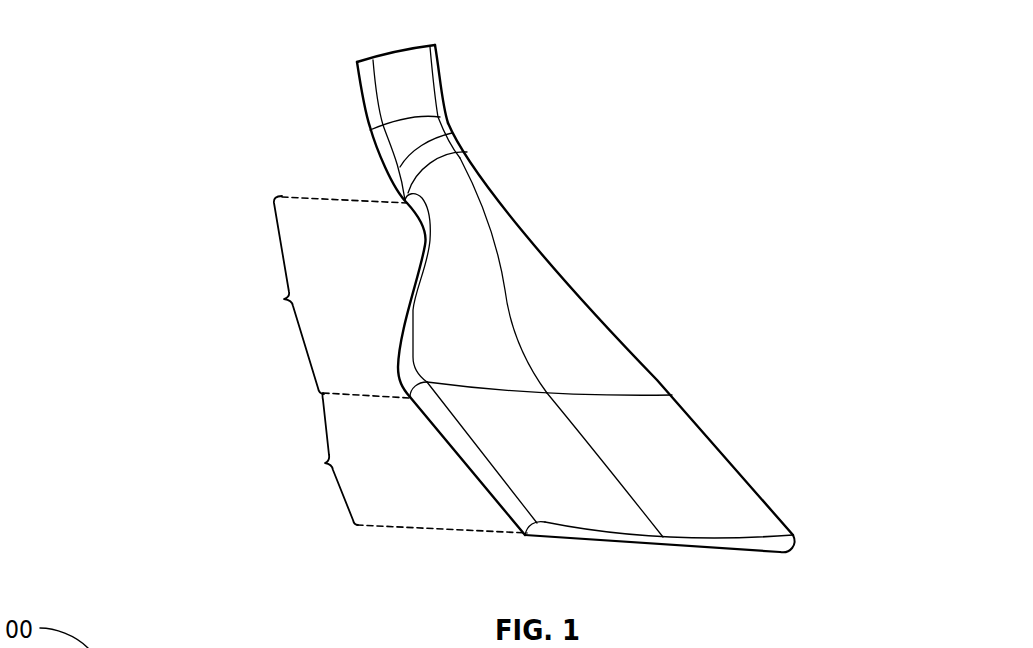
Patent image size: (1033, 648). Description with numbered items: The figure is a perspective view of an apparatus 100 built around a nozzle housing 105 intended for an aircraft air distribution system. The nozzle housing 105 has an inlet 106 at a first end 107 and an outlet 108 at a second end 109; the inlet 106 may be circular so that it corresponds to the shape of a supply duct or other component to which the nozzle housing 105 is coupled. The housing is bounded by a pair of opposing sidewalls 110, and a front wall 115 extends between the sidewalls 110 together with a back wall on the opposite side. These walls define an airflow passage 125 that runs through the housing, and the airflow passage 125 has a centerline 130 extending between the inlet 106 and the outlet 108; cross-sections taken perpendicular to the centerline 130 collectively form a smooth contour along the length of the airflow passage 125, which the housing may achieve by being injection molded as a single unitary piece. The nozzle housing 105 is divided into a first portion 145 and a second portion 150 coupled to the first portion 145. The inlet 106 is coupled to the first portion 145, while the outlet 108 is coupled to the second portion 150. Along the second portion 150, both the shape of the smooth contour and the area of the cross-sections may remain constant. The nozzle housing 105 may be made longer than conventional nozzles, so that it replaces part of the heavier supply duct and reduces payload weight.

The apparatus 100 is at (645, 131).
The nozzle housing 105 is at (643, 358).
The inlet 106 is at (467, 154).
The first end 107 is at (445, 102).
The outlet 108 is at (763, 533).
The second end 109 is at (652, 543).
The opposing sidewalls 110 is at (457, 441).
The front wall 115 is at (563, 328).
The airflow passage 125 is at (540, 532).
The centerline 130 is at (640, 500).
The first portion 145 is at (284, 299).
The second portion 150 is at (325, 463).